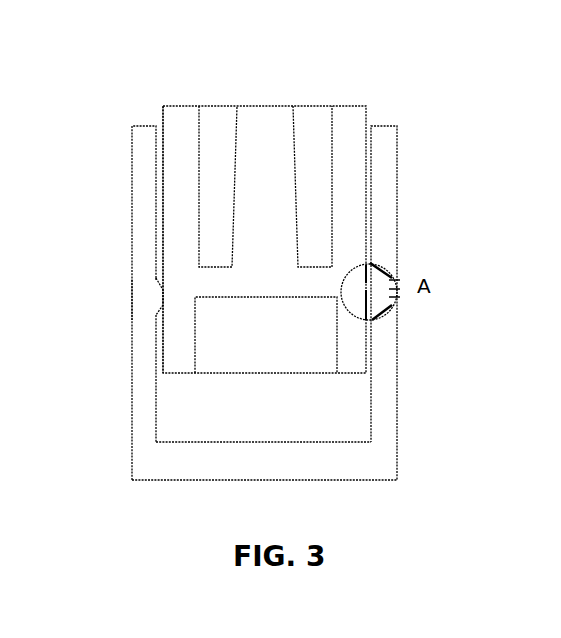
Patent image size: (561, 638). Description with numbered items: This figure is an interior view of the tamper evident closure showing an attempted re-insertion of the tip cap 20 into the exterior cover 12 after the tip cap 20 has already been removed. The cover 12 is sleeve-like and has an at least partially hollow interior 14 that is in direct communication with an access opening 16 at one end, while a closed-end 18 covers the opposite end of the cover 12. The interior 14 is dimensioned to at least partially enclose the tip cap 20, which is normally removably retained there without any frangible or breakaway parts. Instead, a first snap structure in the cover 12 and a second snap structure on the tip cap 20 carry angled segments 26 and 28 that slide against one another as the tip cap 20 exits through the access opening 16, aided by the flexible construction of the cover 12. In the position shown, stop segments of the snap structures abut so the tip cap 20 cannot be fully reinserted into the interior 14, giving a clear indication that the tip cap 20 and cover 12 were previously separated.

The exterior cover 12 is at (387, 183).
The hollow interior 14 is at (266, 357).
The access opening 16 is at (367, 126).
The closed-end 18 is at (155, 461).
The tip cap 20 is at (353, 106).
The angled segment 26 is at (158, 283).
The angled segment 28 is at (142, 300).